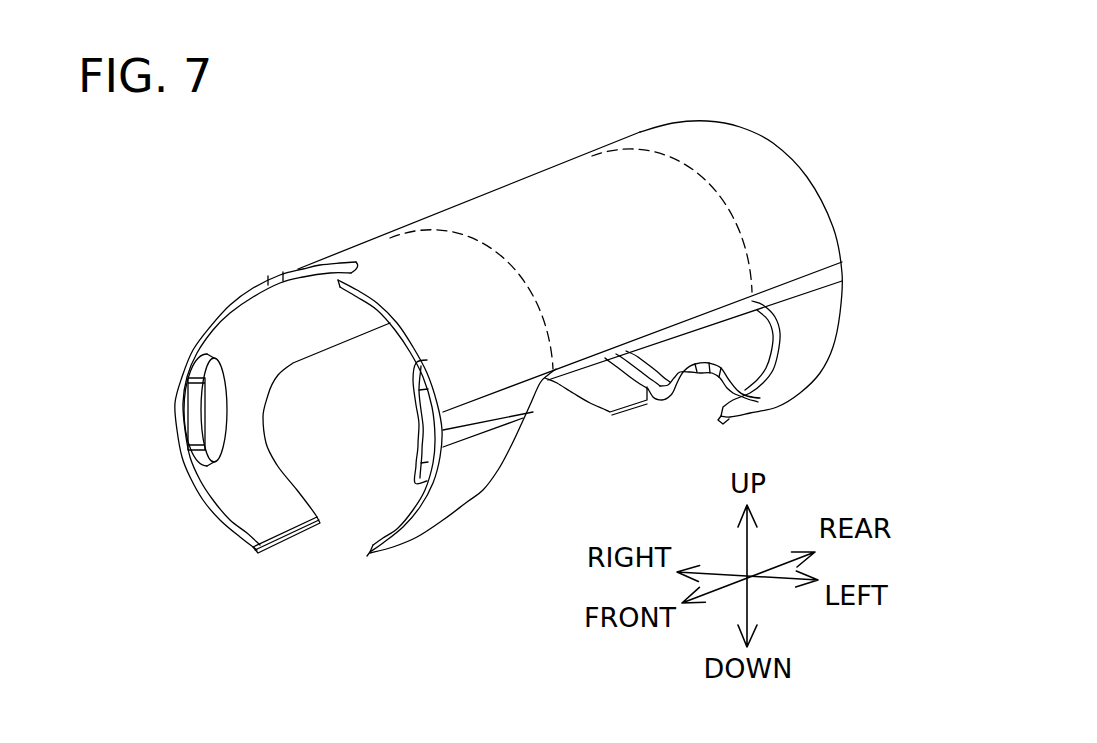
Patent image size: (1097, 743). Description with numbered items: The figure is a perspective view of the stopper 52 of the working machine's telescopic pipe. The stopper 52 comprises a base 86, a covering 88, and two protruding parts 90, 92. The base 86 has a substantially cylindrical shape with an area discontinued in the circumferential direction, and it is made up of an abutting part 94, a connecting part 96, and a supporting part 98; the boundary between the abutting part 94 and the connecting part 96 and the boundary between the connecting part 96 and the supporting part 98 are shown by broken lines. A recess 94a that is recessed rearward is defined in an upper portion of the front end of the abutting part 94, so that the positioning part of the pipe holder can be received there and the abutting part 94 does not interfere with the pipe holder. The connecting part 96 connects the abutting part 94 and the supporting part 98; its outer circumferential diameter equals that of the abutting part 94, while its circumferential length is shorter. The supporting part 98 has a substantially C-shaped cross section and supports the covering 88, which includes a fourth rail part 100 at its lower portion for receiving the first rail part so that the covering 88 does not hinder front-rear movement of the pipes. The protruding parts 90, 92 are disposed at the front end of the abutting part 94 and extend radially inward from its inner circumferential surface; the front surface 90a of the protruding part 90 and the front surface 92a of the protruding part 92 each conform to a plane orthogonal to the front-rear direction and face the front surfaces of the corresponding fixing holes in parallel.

The stopper 52 is at (803, 120).
The base 86 is at (465, 181).
The covering 88 is at (660, 400).
The protruding part 90 is at (190, 405).
The front surface of the protruding part 90a is at (190, 428).
The protruding part 92 is at (422, 410).
The front surface of the protruding part 92a is at (422, 440).
The abutting part 94 is at (358, 254).
The recess 94a is at (320, 270).
The connecting part 96 is at (547, 181).
The supporting part 98 is at (652, 141).
The fourth rail part 100 is at (710, 394).